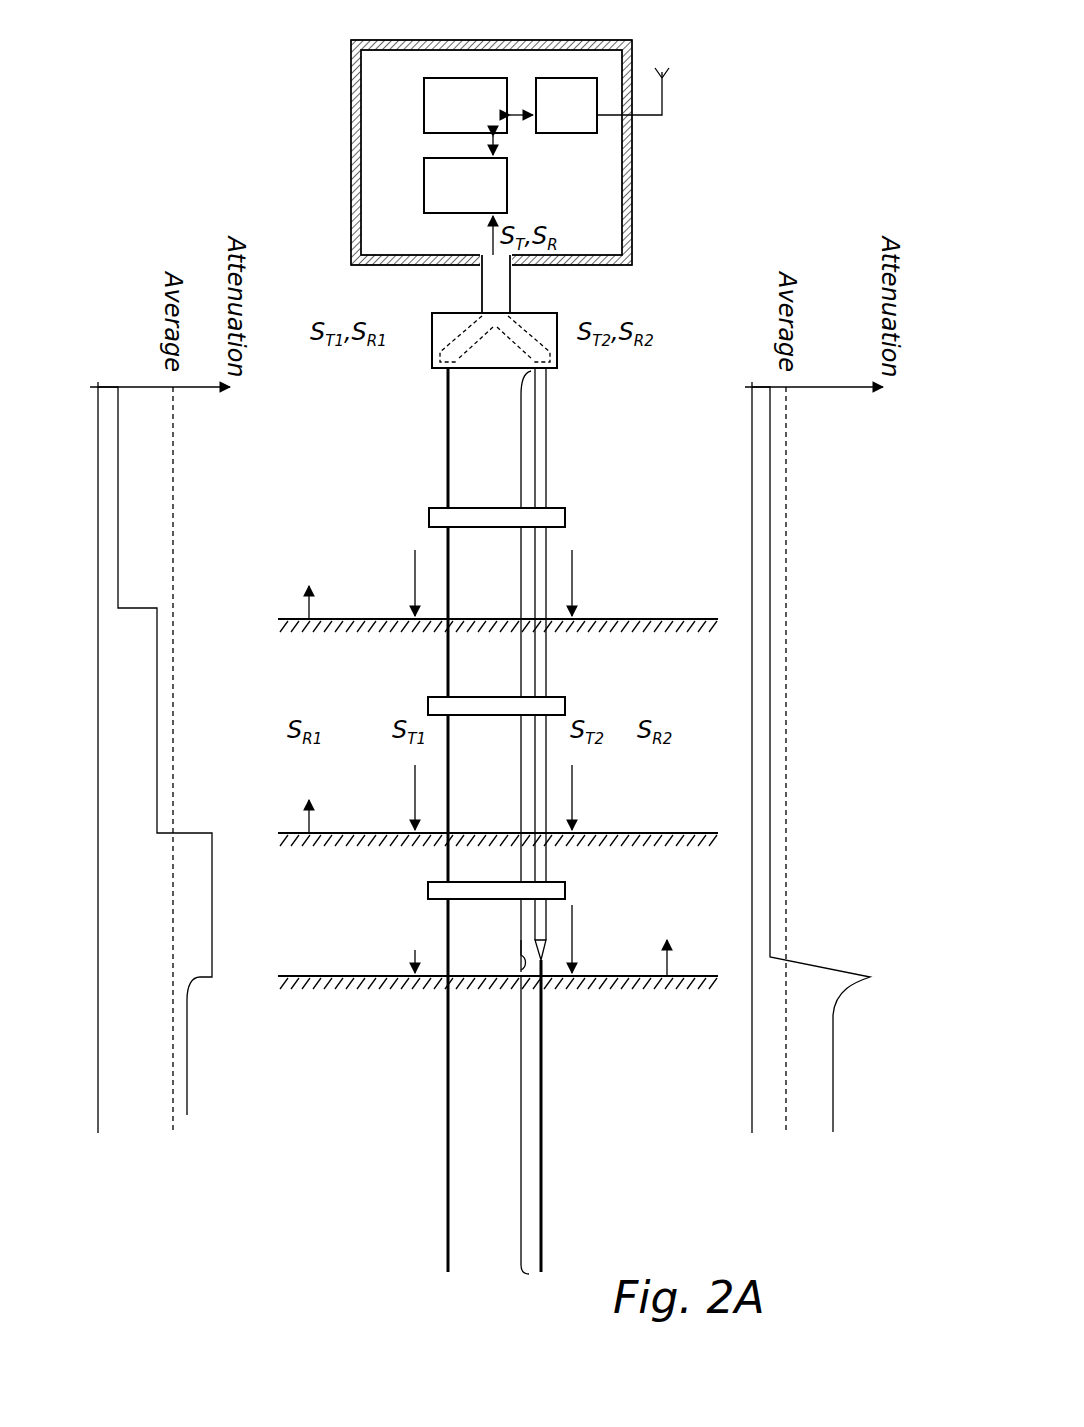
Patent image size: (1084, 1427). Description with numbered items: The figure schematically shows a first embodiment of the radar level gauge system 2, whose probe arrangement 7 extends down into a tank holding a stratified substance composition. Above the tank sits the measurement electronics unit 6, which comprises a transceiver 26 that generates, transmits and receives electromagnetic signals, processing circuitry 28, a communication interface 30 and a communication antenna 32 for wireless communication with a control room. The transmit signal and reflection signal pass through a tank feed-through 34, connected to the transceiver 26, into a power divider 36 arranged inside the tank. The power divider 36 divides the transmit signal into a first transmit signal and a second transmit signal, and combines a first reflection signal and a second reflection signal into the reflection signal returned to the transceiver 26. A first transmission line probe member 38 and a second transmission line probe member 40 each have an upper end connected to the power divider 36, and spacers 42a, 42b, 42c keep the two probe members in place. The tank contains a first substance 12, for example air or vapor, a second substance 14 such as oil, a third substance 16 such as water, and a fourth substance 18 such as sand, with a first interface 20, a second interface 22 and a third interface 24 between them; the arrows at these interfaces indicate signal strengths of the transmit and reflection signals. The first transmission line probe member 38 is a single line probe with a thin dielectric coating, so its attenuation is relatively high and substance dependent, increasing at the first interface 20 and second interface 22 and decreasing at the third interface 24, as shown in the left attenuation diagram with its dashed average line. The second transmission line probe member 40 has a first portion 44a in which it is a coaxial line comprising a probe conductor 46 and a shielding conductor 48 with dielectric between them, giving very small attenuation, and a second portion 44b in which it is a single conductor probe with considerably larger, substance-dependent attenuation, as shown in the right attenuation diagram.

The radar level gauge system 2 is at (725, 56).
The measurement electronics unit 6 is at (645, 38).
The downhole cable assembly 7 is at (612, 405).
The first substance 12 is at (440, 584).
The second substance 14 is at (440, 799).
The third substance 16 is at (541, 940).
The fourth substance 18 is at (492, 1212).
The first interface 20 is at (350, 619).
The second interface 22 is at (385, 833).
The third interface 24 is at (360, 976).
The transceiver 26 is at (424, 178).
The processing circuitry 28 is at (424, 112).
The communication interface 30 is at (558, 78).
The communication antenna 32 is at (662, 92).
The tank feed-through 34 is at (501, 265).
The power divider 36 is at (432, 330).
The first transmission line probe member 38 is at (448, 433).
The second transmission line probe member 40 is at (548, 443).
The spacer 42a is at (545, 520).
The spacer 42b is at (557, 705).
The spacer 42c is at (558, 890).
The first portion 44a is at (519, 665).
The second portion 44b is at (519, 1118).
The probe conductor 46 is at (542, 1183).
The shielding conductor 48 is at (548, 868).